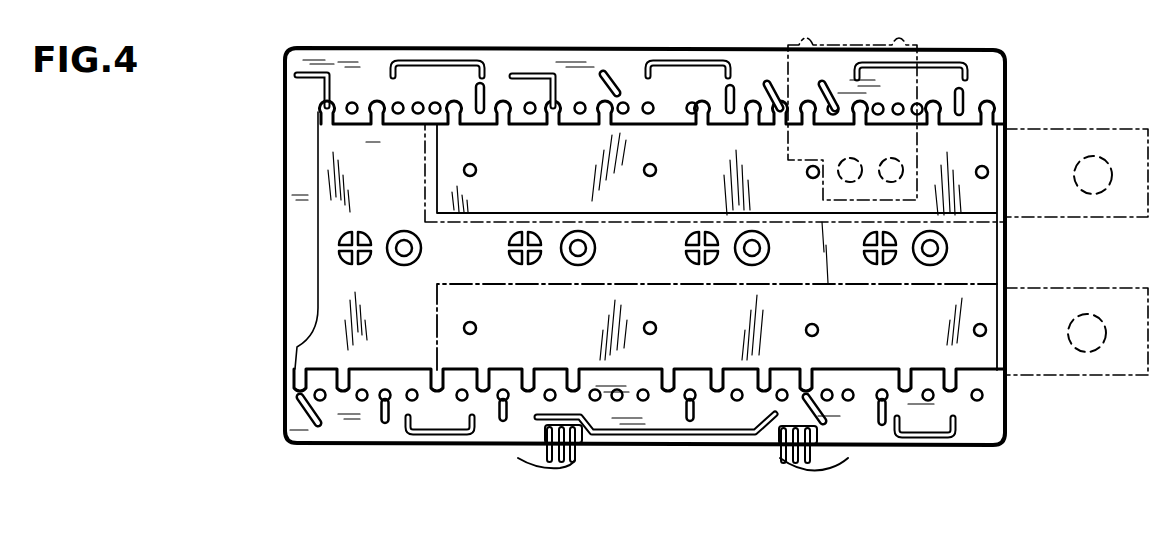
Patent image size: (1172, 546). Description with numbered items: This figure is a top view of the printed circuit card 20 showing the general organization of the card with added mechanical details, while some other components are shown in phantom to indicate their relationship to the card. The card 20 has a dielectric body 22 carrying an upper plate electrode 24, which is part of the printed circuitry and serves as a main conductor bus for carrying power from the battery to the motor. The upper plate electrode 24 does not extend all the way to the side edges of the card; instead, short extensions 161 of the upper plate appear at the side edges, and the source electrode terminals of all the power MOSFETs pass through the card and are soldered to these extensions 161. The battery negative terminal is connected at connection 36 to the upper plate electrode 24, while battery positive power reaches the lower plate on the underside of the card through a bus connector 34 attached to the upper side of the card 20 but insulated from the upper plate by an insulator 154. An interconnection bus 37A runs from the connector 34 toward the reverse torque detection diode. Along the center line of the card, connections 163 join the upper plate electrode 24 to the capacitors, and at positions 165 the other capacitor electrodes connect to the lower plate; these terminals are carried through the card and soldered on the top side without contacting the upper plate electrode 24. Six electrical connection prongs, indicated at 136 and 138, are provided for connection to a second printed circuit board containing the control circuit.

The printed circuit card 20 is at (263, 156).
The dielectric body 22 is at (286, 94).
The upper plate electrode 24 is at (322, 328).
The bus connector 34 is at (1096, 122).
The connection 36 is at (1104, 288).
The interconnection bus 37A is at (824, 34).
The electrical connection prong 136 is at (542, 462).
The electrical connection prong 138 is at (840, 456).
The insulator 154 is at (436, 154).
The extensions of the upper electrode plate 161 is at (380, 104).
The capacitor connections to upper electrode plate 163 is at (354, 232).
The capacitor connections to lower plate 165 is at (410, 252).